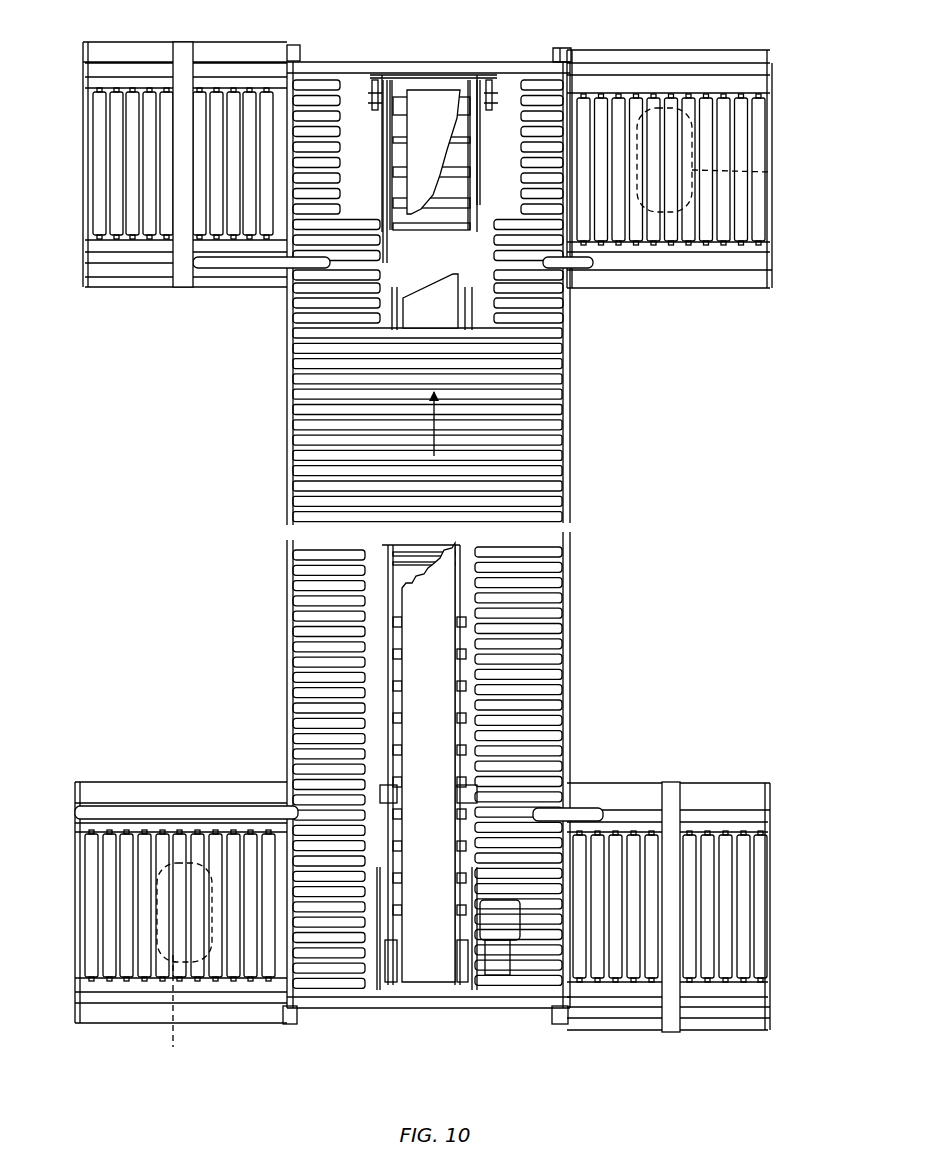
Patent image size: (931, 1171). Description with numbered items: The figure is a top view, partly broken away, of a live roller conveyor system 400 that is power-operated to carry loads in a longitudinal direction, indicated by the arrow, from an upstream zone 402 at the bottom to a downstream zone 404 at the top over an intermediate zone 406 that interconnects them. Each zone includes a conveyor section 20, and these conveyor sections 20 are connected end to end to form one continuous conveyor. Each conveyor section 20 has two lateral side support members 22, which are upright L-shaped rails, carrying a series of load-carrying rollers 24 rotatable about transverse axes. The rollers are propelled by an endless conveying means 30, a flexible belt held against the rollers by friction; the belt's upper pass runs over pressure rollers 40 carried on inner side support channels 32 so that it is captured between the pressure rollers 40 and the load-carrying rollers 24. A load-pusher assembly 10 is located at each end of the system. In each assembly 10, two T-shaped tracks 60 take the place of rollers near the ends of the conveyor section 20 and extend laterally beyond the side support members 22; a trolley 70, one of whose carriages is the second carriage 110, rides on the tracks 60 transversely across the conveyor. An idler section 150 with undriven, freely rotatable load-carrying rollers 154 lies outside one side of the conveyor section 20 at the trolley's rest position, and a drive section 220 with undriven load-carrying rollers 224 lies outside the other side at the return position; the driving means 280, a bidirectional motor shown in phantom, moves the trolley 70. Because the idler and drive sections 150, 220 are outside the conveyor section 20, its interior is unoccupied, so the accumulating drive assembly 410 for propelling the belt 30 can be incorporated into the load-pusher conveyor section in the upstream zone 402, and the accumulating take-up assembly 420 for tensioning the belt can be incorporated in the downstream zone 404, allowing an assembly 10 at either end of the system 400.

The load-pusher assembly 10 is at (428, 543).
The conveyor section 20 is at (490, 156).
The lateral side support member 22 is at (301, 53).
The load-carrying roller 24 is at (540, 95).
The endless conveying means 30 is at (430, 323).
The inner side support channel 32 is at (392, 556).
The pressure roller 40 is at (400, 551).
The T-shaped track 60 is at (395, 68).
The trolley 70 is at (180, 290).
The second carriage 110 is at (150, 52).
The idler section 150 is at (88, 190).
The load-carrying roller 154 is at (100, 125).
The drive section 220 is at (775, 205).
The load-carrying roller 224 is at (745, 118).
The driving means 280 is at (795, 174).
The live roller conveyor system 400 is at (530, 546).
The upstream zone 402 is at (436, 1013).
The downstream zone 404 is at (470, 72).
The intermediate zone 406 is at (575, 487).
The accumulating drive assembly 410 is at (480, 821).
The accumulating take-up assembly 420 is at (494, 183).